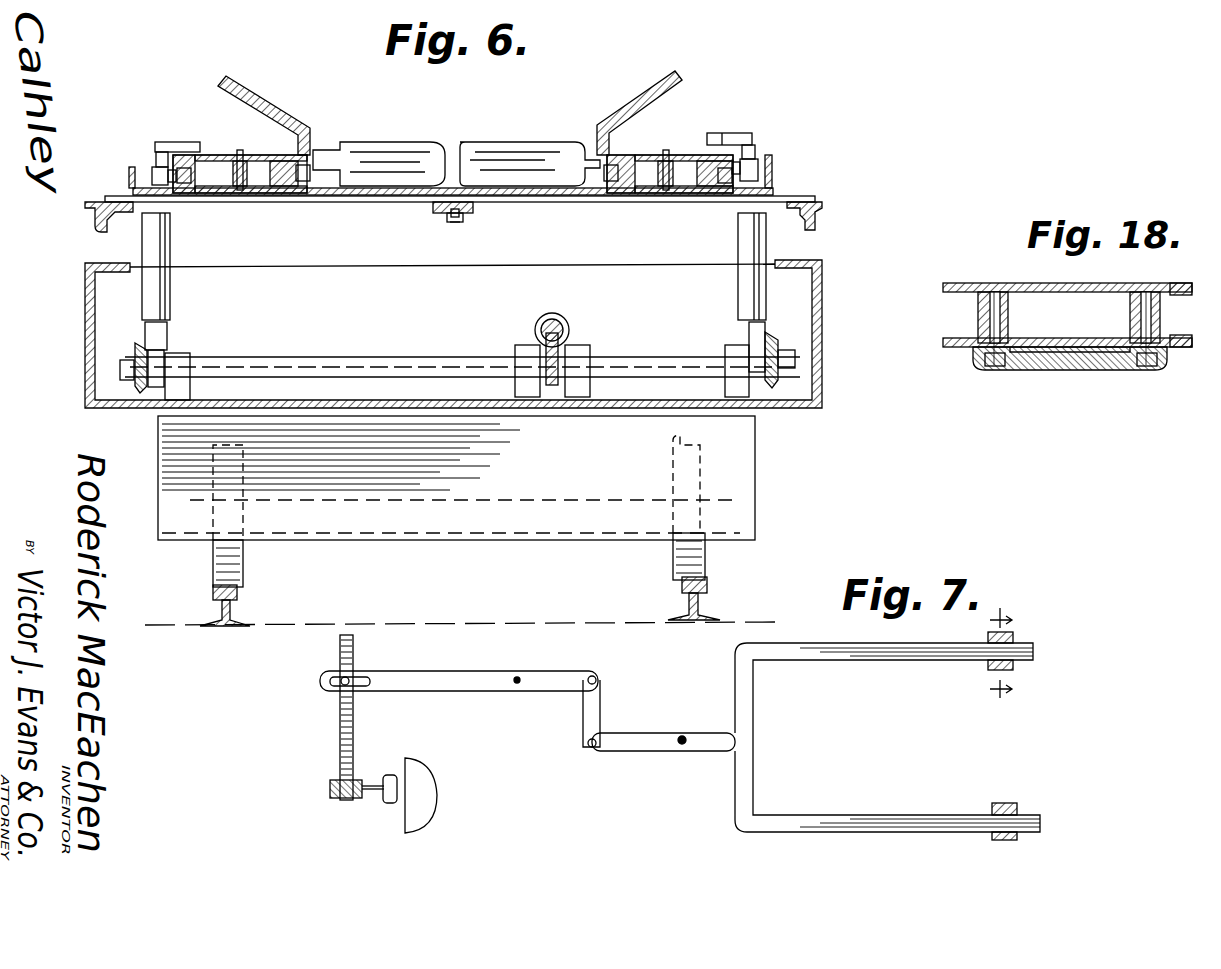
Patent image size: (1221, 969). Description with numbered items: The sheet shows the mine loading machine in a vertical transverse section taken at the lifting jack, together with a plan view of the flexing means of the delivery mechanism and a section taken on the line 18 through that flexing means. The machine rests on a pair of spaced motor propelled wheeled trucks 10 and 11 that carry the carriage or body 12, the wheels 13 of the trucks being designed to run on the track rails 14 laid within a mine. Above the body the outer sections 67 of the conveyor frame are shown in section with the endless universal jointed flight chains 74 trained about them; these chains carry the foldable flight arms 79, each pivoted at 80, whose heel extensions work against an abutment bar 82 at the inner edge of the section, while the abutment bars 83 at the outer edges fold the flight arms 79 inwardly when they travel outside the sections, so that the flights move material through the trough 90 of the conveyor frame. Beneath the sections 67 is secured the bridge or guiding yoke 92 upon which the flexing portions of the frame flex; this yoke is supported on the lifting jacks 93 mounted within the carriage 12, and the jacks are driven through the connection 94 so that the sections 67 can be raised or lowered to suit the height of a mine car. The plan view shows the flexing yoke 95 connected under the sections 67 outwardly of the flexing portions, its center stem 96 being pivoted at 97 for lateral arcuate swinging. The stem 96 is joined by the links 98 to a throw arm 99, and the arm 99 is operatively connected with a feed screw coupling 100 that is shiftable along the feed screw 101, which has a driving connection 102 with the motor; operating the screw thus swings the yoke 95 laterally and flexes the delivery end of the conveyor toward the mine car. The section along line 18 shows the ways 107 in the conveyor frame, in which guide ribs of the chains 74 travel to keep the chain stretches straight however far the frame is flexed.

In FIG. 18, the wheeled truck 10 is at (1165, 335).
In FIG. 6, the wheeled truck 11 is at (148, 460).
In FIG. 6, the carriage or body 12 is at (824, 320).
In FIG. 6, the wheels 13 is at (245, 575).
In FIG. 6, the track rails 14 is at (212, 595).
In FIG. 7, the section line 18 is at (1018, 655).
In FIG. 6, the outer section of conveyor frame 67 is at (220, 160).
In FIG. 18, the outer section of conveyor frame 67 is at (1032, 283).
In FIG. 6, the endless universal jointed flight chain 74 is at (192, 180).
In FIG. 6, the foldable flight arm 79 is at (152, 170).
In FIG. 6, the pivot 80 is at (178, 142).
In FIG. 6, the abutment bar 82 is at (308, 133).
In FIG. 6, the abutment bar 83 is at (128, 180).
In FIG. 6, the trough 90 is at (385, 186).
In FIG. 6, the bridge or guiding yoke 92 is at (90, 213).
In FIG. 6, the lifting jack 93 is at (160, 255).
In FIG. 6, the connection 94 is at (535, 340).
In FIG. 7, the flexing yoke 95 is at (898, 662).
In FIG. 18, the flexing yoke 95 is at (1072, 360).
In FIG. 6, the center stem 96 is at (440, 213).
In FIG. 7, the center stem 96 is at (650, 753).
In FIG. 6, the pivot 97 is at (462, 218).
In FIG. 7, the pivot 97 is at (684, 737).
In FIG. 7, the link 98 is at (584, 707).
In FIG. 7, the throw arm 99 is at (445, 676).
In FIG. 7, the feed screw coupling 100 is at (358, 673).
In FIG. 7, the feed screw 101 is at (340, 726).
In FIG. 7, the driving connection 102 is at (375, 795).
In FIG. 18, the ways 107 is at (963, 300).